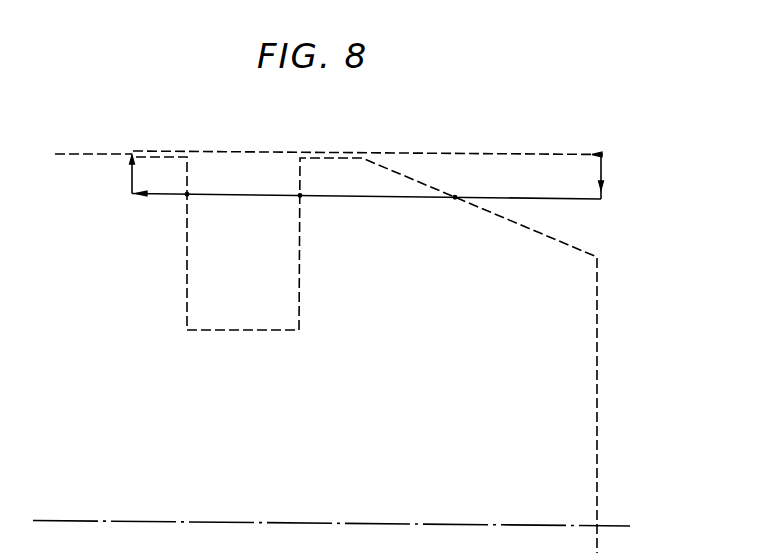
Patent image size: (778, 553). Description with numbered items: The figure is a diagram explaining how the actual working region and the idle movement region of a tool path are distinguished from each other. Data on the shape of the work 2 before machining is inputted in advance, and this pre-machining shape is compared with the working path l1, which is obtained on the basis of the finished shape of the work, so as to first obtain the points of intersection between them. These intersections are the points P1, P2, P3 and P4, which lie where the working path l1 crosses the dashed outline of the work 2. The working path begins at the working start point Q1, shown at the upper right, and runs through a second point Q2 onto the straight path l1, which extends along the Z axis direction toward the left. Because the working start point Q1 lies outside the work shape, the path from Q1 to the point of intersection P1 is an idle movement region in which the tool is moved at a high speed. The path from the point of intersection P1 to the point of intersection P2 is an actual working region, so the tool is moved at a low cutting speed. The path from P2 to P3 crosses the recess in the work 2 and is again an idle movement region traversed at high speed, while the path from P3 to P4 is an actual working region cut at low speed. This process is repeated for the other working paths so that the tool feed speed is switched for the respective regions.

The workpiece contour 2 is at (68, 153).
The working path l1 is at (398, 200).
The point of intersection P4 is at (130, 157).
The point of intersection P3 is at (186, 197).
The point of intersection P2 is at (302, 198).
The point of intersection P1 is at (454, 200).
The working start point Q1 is at (603, 156).
The approach point Q2 is at (602, 201).
The Z axis Z is at (638, 526).